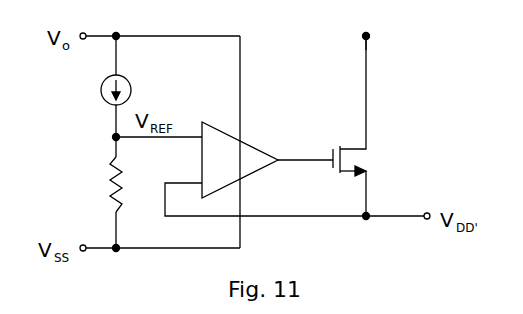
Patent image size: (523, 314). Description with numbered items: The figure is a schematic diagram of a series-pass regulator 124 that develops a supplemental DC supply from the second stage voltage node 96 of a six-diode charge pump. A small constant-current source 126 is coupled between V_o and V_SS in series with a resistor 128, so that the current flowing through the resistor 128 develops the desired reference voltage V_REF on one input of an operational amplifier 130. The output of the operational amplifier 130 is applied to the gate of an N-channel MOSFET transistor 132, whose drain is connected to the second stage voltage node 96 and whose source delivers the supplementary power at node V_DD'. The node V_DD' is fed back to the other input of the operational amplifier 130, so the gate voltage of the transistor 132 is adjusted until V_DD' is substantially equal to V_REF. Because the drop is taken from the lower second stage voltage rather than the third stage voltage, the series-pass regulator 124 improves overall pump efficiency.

The second stage voltage node 96 is at (367, 38).
The series-pass regulator 124 is at (375, 252).
The constant-current source 126 is at (131, 91).
The resistor 128 is at (109, 189).
The operational amplifier 130 is at (257, 165).
The N-channel MOSFET transistor 132 is at (353, 142).